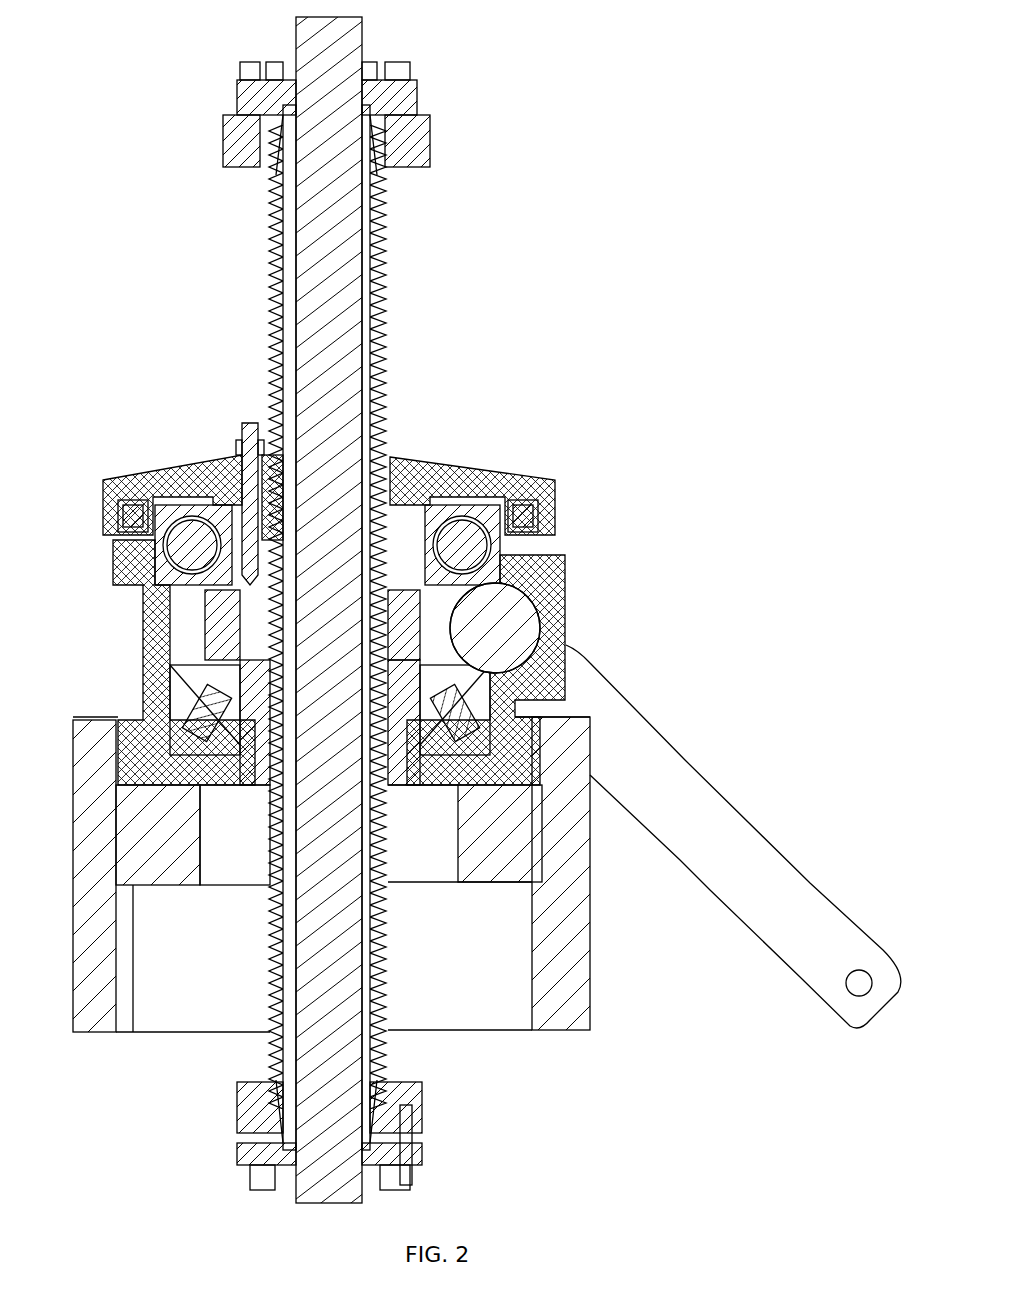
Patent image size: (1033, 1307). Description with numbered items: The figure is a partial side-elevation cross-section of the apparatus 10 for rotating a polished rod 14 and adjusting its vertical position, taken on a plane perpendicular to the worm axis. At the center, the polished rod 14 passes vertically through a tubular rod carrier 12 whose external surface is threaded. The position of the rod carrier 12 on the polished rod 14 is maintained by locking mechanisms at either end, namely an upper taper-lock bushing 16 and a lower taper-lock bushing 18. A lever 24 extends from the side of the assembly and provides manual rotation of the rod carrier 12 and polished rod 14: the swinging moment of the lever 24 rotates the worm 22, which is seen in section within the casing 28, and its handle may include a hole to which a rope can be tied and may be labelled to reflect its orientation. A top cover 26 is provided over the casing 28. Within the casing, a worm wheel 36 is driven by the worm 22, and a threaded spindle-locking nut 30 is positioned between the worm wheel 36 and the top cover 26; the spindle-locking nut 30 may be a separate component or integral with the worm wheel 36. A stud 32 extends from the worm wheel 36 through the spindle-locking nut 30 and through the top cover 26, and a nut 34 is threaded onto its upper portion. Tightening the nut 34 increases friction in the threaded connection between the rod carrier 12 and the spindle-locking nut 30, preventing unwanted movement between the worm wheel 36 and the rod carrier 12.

The apparatus 10 is at (745, 109).
The tubular rod carrier 12 is at (380, 255).
The polished rod 14 is at (345, 315).
The upper taper-lock bushing 16 is at (399, 118).
The lower taper-lock bushing 18 is at (250, 1157).
The worm 22 is at (492, 607).
The lever 24 is at (758, 850).
The top cover 26 is at (103, 484).
The casing 28 is at (143, 634).
The threaded spindle-locking nut 30 is at (397, 503).
The stud 32 is at (248, 427).
The nut 34 is at (236, 447).
The worm wheel 36 is at (522, 492).